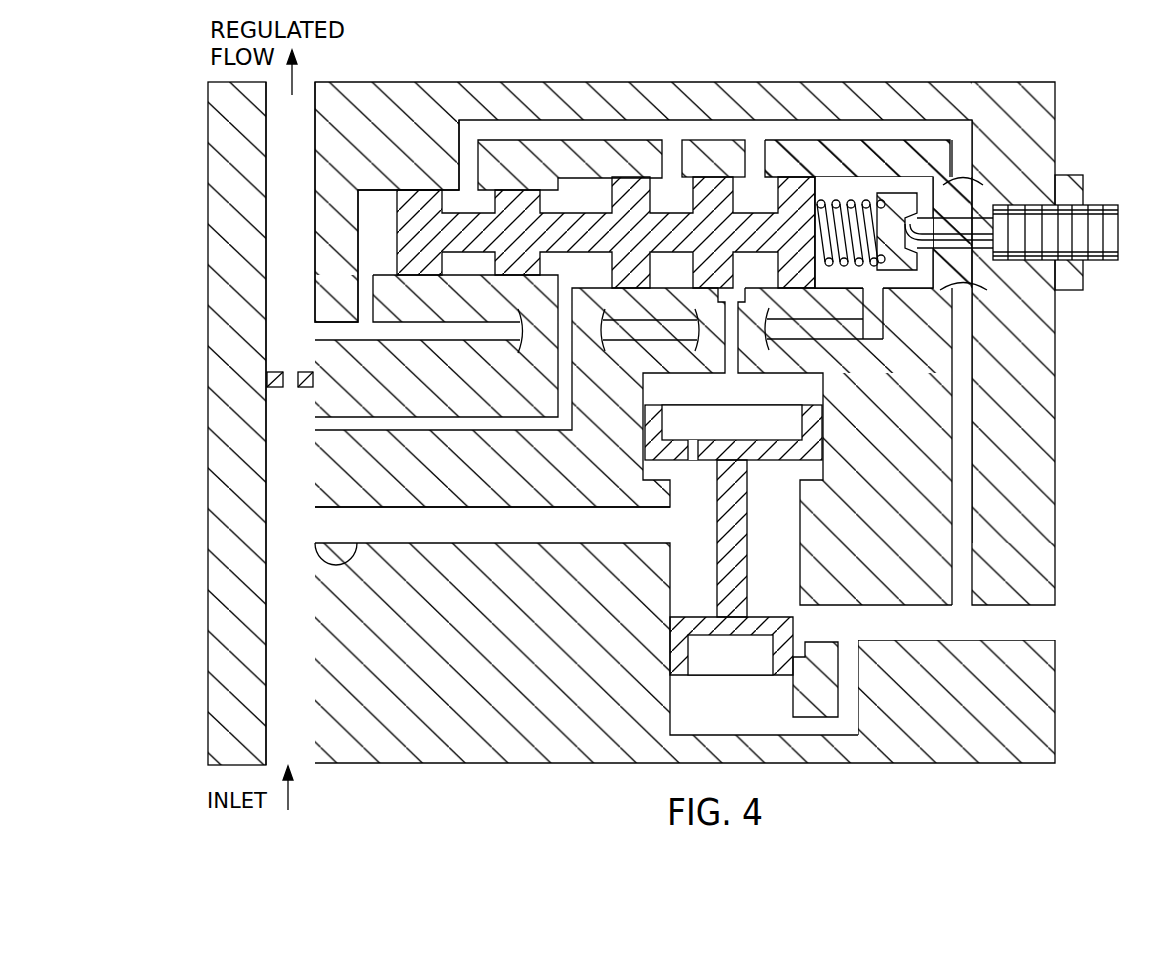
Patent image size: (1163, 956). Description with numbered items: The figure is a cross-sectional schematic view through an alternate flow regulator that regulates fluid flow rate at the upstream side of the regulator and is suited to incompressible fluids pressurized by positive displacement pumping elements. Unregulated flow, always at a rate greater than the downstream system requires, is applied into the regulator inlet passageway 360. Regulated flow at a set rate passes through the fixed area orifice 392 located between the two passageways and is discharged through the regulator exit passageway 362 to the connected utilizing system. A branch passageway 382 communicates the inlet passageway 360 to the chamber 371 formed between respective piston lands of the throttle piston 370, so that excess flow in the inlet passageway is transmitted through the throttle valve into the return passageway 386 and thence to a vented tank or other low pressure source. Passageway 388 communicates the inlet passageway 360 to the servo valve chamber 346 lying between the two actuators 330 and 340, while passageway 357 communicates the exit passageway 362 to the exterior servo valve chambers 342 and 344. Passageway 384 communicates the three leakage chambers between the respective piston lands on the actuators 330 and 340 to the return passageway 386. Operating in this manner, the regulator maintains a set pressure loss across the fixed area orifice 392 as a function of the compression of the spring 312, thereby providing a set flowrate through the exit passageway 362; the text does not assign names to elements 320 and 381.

The spring 312 is at (860, 187).
The spool 320 is at (598, 206).
The actuator 330 is at (507, 187).
The actuator 340 is at (833, 203).
The exterior servo valve chamber 342 is at (943, 183).
The exterior servo valve chamber 344 is at (377, 205).
The servo valve chamber 346 is at (580, 190).
The passageway 357 is at (373, 343).
The regulator inlet passageway 360 is at (280, 650).
The regulator exit passageway 362 is at (267, 247).
The throttle piston 370 is at (800, 627).
The chamber 371 is at (790, 527).
The chamber 381 is at (782, 537).
The branch passageway 382 is at (316, 547).
The passageway 384 is at (973, 393).
The return passageway 386 is at (1000, 605).
The passageway 388 is at (372, 433).
The fixed area orifice 392 is at (265, 395).